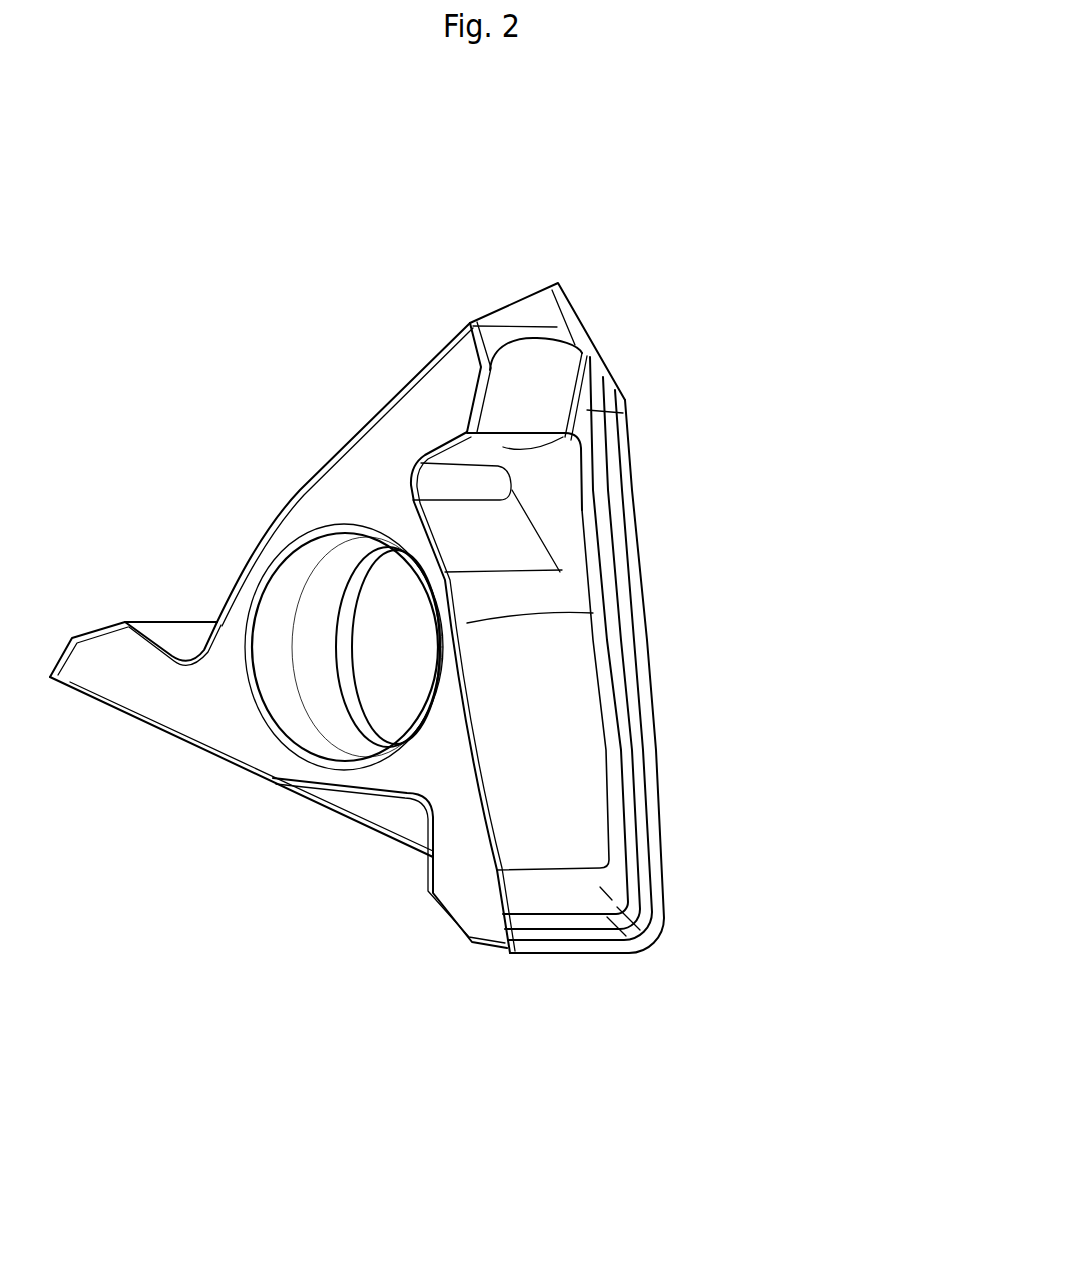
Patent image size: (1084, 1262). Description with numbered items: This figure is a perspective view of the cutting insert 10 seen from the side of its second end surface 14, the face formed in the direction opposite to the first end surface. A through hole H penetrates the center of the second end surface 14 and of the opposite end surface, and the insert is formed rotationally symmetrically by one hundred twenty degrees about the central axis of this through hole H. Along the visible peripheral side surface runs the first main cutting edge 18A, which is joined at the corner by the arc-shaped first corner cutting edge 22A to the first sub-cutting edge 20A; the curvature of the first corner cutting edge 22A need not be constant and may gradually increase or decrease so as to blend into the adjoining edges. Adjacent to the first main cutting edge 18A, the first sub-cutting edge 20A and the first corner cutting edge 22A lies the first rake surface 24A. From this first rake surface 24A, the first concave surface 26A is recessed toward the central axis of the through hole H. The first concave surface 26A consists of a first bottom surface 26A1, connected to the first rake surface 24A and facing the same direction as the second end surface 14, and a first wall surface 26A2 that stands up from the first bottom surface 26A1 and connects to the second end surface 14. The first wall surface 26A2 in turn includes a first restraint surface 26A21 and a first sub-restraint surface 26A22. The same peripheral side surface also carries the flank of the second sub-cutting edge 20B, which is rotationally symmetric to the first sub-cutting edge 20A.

The cutting insert 10 is at (283, 838).
The second end surface 14 is at (370, 483).
The through hole H is at (279, 639).
The second sub-cutting edge 20B is at (507, 310).
The first concave surface 26A is at (880, 427).
The first bottom surface 26A1 is at (565, 497).
The first wall surface 26A2 is at (509, 600).
The first restraint surface 26A21 is at (627, 400).
The first sub-restraint surface 26A22 is at (547, 698).
The first main cutting edge 18A is at (658, 747).
The first rake surface 24A is at (645, 829).
The first corner cutting edge 22A is at (663, 930).
The first sub-cutting edge 20A is at (567, 953).